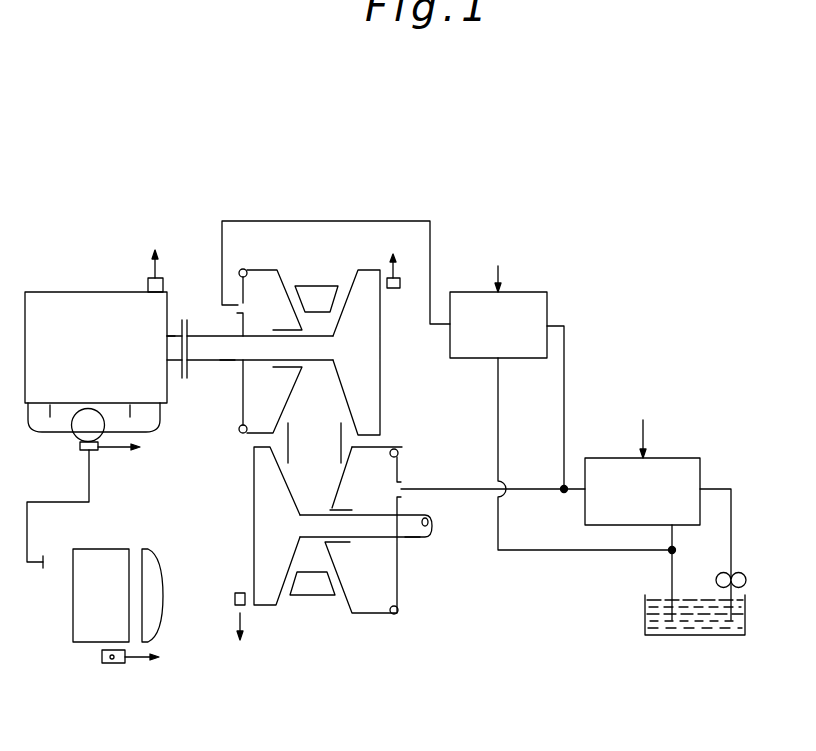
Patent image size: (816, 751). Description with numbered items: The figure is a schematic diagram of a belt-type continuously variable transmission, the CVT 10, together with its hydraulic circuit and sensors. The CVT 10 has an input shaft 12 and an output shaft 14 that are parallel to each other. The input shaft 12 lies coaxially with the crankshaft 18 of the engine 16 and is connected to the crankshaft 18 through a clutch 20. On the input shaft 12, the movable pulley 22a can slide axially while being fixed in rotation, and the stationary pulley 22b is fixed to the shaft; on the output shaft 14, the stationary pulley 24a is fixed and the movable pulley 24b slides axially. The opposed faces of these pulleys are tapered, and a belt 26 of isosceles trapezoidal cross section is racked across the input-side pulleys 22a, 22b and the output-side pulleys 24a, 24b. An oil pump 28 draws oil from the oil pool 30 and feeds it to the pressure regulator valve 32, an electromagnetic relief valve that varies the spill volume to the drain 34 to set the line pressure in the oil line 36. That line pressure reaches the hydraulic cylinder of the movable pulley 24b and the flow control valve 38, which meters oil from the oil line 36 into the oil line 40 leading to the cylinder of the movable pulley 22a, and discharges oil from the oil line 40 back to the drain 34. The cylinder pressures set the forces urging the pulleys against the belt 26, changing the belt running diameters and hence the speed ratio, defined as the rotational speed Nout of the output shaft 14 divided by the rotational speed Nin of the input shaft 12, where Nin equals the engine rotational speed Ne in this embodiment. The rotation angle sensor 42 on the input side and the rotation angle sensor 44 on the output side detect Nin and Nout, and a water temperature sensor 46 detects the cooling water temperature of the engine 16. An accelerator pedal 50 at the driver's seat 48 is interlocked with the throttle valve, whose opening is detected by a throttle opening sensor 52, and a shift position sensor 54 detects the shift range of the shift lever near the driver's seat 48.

The CVT 10 is at (354, 416).
The input shaft 12 is at (207, 358).
The output shaft 14 is at (402, 543).
The engine 16 is at (74, 307).
The crankshaft 18 is at (172, 362).
The clutch 20 is at (188, 326).
The movable pulley on the input side 22a is at (260, 283).
The stationary pulley on the input side 22b is at (370, 413).
The stationary pulley on the output side 24a is at (264, 606).
The movable pulley on the output side 24b is at (381, 606).
The belt 26 is at (318, 297).
The oil pump 28 is at (745, 575).
The oil pool 30 is at (721, 635).
The pressure regulator valve 32 is at (672, 463).
The drain 34 is at (671, 572).
The oil line 36 is at (565, 397).
The flow control valve 38 is at (523, 297).
The oil line 40 is at (432, 247).
The rotation angle sensor on the input side 42 is at (392, 291).
The rotation angle sensor on the output side 44 is at (235, 599).
The water temperature sensor 46 is at (148, 284).
The driver's seat 48 is at (101, 560).
The accelerator pedal 50 is at (45, 562).
The throttle opening sensor 52 is at (96, 450).
The shift position sensor 54 is at (112, 663).
The engine rotational speed Ne is at (172, 333).
The rotational speed of the input shaft Nin is at (227, 357).
The rotational speed of the output shaft Nout is at (418, 542).